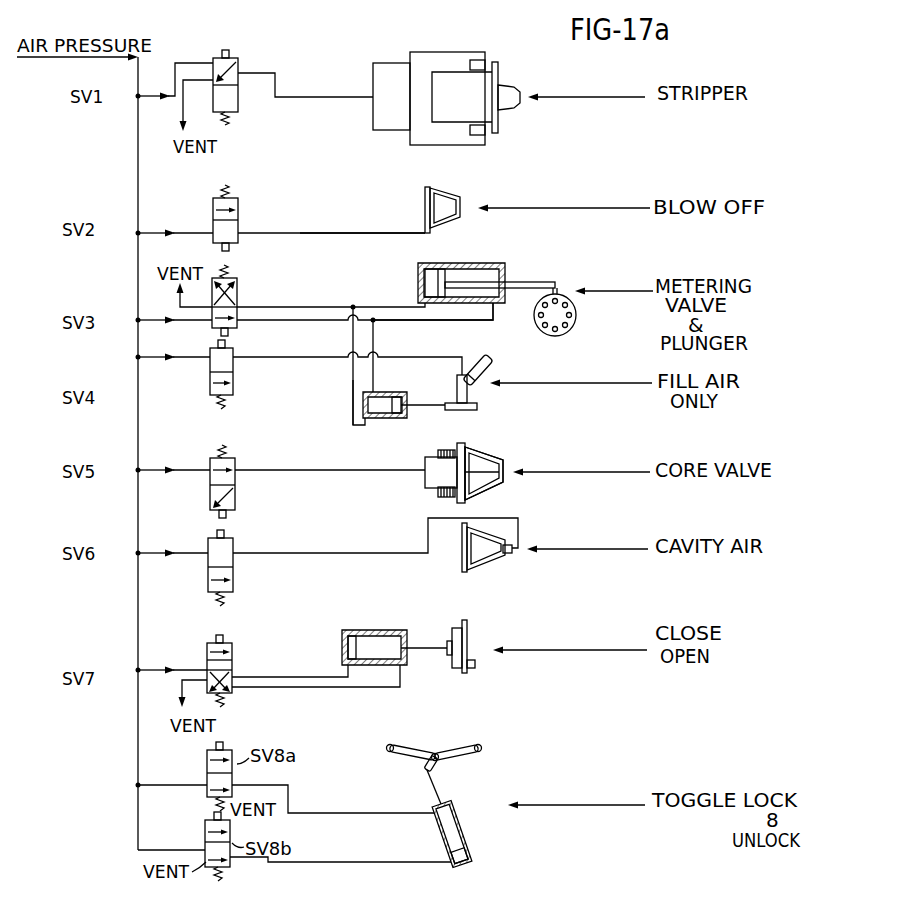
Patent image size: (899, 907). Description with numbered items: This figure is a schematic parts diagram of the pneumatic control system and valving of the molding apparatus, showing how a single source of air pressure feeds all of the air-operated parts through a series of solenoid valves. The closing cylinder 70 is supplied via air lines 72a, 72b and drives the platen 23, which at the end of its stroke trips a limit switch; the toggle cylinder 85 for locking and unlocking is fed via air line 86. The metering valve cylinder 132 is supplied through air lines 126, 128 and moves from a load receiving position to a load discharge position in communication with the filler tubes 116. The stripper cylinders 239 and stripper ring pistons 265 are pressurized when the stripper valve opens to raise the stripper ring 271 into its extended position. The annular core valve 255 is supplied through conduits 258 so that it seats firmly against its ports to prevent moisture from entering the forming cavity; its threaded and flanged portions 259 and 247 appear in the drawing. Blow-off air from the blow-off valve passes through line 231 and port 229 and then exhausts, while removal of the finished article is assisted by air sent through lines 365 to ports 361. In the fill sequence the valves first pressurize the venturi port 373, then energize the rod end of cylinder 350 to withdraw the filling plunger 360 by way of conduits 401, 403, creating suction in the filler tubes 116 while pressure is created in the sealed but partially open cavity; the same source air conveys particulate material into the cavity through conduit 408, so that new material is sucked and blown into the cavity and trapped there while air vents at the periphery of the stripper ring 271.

The stripper cylinder 239 is at (483, 60).
The stripper ring 271 is at (498, 78).
The stripper ring piston 265 is at (490, 133).
The blow-off air line 231 is at (352, 238).
The blow-off port 229 is at (436, 228).
The metering valve cylinder 132 is at (479, 289).
The metering valve air line 126 is at (415, 308).
The metering valve air line 128 is at (497, 319).
The material conveying conduit 408 is at (402, 359).
The filling plunger conduit 401 is at (364, 372).
The filling plunger conduit 403 is at (356, 428).
The venturi port 373 is at (457, 384).
The filler tube 116 is at (489, 367).
The filling plunger 360 is at (477, 406).
The plunger cylinder 350 is at (408, 416).
The annular core valve 255 is at (495, 456).
The core valve conduit 258 is at (422, 474).
The core valve threaded portion 259 is at (436, 492).
The core valve flange 247 is at (492, 480).
The removal assist line 365 is at (518, 526).
The removal assist port 361 is at (514, 554).
The platen 23 is at (466, 645).
The closing cylinder air line 72a is at (298, 678).
The closing cylinder air line 72b is at (393, 688).
The closing cylinder 70 is at (407, 667).
The toggle cylinder 85 is at (460, 815).
The toggle cylinder air line 86 is at (397, 863).